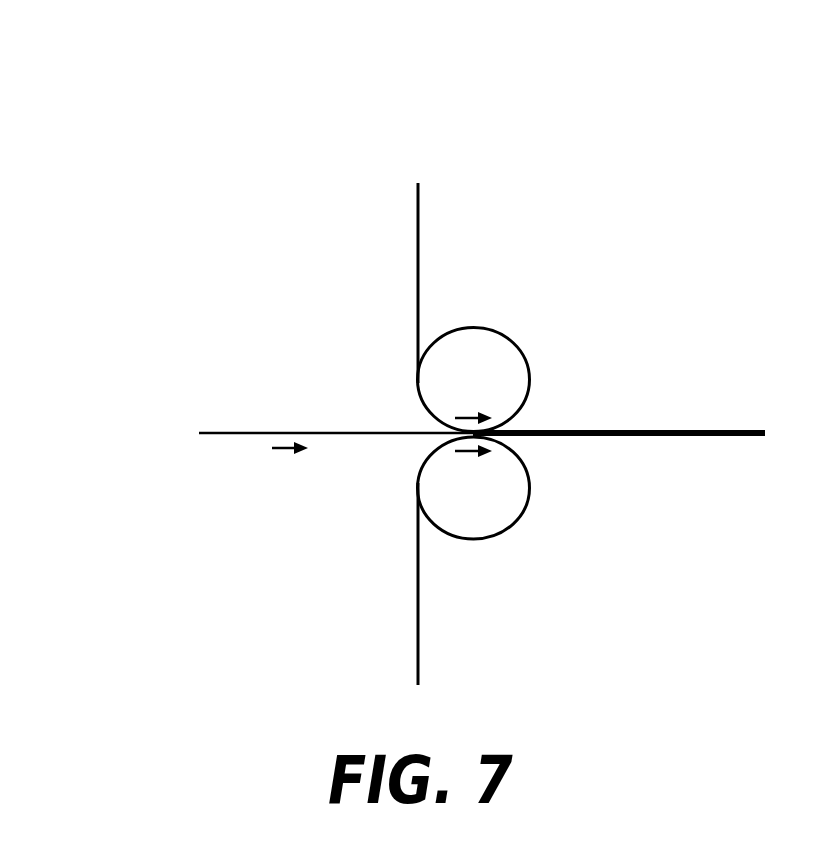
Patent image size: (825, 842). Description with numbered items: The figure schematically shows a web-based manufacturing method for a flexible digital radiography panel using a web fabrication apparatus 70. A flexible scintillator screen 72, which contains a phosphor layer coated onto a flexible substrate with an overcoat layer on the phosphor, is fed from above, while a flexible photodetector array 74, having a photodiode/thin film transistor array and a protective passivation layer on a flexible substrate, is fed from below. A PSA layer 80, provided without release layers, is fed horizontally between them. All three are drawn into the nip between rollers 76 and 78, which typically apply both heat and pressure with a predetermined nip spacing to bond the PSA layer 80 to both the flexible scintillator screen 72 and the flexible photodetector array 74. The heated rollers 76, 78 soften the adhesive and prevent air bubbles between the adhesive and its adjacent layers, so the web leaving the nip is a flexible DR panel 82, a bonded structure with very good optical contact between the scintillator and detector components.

The web fabrication apparatus 70 is at (145, 101).
The flexible scintillator screen 72 is at (417, 265).
The flexible photodetector array 74 is at (417, 637).
The roller 76 is at (507, 335).
The roller 78 is at (517, 520).
The PSA layer 80 is at (235, 430).
The flexible DR panel 82 is at (620, 429).